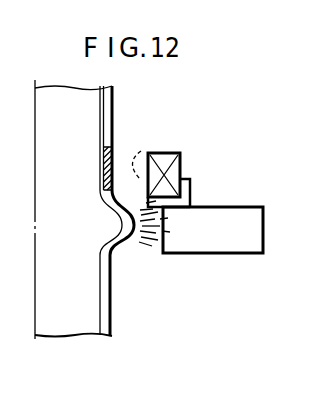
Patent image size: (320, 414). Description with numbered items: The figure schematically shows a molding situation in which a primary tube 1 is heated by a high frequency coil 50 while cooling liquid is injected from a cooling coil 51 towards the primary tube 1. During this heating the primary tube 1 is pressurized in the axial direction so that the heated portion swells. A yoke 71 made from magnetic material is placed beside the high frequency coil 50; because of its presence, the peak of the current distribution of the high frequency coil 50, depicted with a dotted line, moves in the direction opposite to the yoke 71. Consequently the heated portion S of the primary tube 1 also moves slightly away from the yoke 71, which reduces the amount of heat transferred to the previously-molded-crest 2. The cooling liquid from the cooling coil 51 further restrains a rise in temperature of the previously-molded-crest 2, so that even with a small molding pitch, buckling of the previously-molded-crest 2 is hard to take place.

The primary tube 1 is at (108, 320).
The previously-molded-crest 2 is at (117, 247).
The heated portion S is at (113, 152).
The high frequency coil 50 is at (182, 157).
The yoke 71 is at (191, 187).
The cooling coil 51 is at (264, 226).